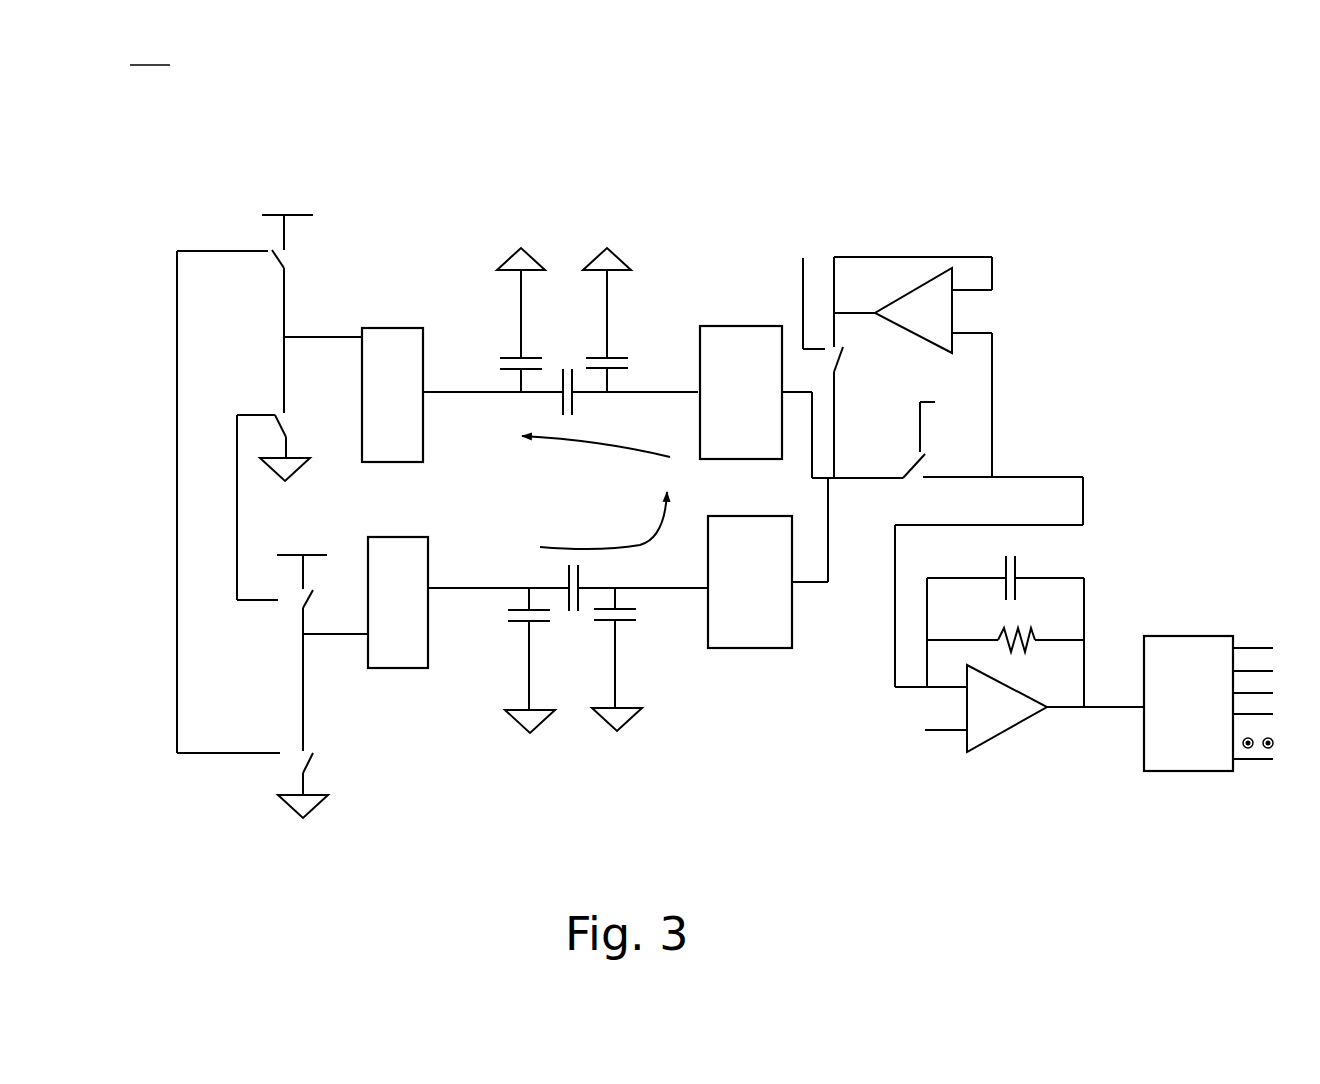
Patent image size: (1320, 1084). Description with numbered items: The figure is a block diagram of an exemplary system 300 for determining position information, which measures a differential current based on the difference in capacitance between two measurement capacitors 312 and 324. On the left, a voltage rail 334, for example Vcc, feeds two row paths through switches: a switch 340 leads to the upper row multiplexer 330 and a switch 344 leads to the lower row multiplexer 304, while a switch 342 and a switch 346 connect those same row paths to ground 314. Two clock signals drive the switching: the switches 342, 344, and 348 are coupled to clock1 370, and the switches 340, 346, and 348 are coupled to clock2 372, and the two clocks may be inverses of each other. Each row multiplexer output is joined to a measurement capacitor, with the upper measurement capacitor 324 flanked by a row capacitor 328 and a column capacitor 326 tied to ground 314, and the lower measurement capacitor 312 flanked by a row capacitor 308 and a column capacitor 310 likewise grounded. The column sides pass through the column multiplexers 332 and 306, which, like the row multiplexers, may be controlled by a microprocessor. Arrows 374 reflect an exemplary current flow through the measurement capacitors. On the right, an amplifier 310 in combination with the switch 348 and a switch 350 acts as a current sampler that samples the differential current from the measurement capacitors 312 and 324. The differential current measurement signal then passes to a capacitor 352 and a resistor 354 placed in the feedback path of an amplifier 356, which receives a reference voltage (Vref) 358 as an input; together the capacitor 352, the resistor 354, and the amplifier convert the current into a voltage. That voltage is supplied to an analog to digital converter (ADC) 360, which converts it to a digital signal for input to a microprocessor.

The system 300 is at (150, 55).
The row multiplexer 304 is at (398, 602).
The column multiplexer 306 is at (750, 582).
The row capacitor 308 is at (514, 632).
The column capacitor / amplifier 310 is at (634, 630).
The measurement capacitor 312 is at (558, 564).
The ground 314 is at (289, 484).
The measurement capacitor 324 is at (573, 418).
The column capacitor 326 is at (626, 348).
The row capacitor 328 is at (508, 349).
The row multiplexer 330 is at (392, 395).
The column multiplexer 332 is at (741, 392).
The voltage rail 334 is at (291, 208).
The switch 340 is at (296, 263).
The switch 342 is at (297, 427).
The switch 344 is at (353, 603).
The switch 346 is at (357, 763).
The switch 348 is at (841, 381).
The switch 350 is at (917, 490).
The capacitor 352 is at (1021, 551).
The resistor 354 is at (1057, 597).
The amplifier 356 is at (1010, 752).
The reference voltage (Vref) 358 is at (914, 736).
The analog to digital converter (ADC) 360 is at (1208, 703).
The clock1 370 is at (604, 485).
The clock2 372 is at (501, 479).
The arrows 374 is at (596, 492).